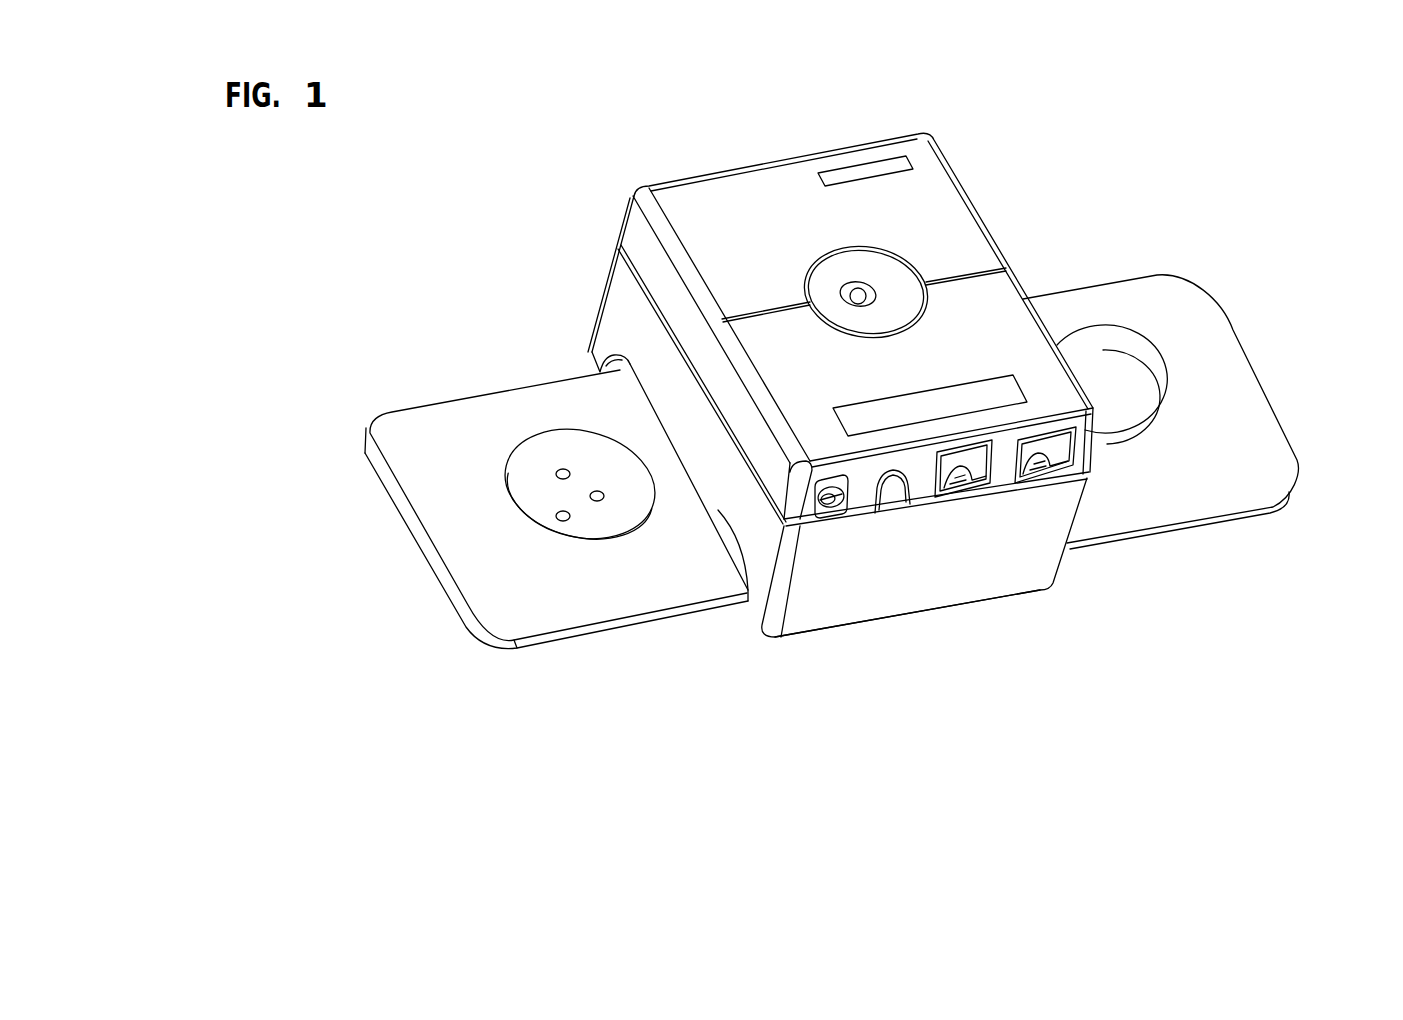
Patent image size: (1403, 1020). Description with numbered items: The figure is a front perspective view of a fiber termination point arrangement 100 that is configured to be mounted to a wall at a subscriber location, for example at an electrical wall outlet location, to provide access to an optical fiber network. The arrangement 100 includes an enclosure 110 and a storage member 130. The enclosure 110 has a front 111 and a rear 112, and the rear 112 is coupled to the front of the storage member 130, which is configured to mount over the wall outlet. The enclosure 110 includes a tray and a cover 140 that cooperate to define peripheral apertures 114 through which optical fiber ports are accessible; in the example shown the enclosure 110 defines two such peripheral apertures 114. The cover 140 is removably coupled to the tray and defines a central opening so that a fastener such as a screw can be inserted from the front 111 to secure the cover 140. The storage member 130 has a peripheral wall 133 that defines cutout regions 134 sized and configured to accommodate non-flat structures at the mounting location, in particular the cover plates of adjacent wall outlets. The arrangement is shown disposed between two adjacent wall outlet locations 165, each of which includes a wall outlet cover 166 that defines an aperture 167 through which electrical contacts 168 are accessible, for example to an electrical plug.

The fiber termination point arrangement 100 is at (998, 159).
The enclosure 110 is at (735, 160).
The front 111 is at (928, 163).
The rear 112 is at (746, 630).
The peripheral aperture 114 is at (960, 487).
The storage member 130 is at (921, 617).
The peripheral wall 133 is at (823, 580).
The cutout region 134 is at (601, 362).
The cover 140 is at (830, 163).
The adjacent wall outlet location 165 is at (497, 660).
The wall outlet cover 166 is at (1240, 477).
The aperture 167 is at (532, 516).
The electrical contacts 168 is at (604, 523).